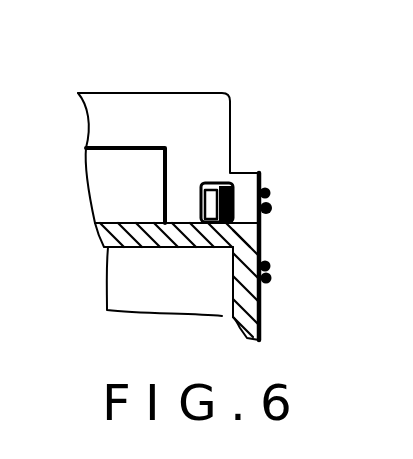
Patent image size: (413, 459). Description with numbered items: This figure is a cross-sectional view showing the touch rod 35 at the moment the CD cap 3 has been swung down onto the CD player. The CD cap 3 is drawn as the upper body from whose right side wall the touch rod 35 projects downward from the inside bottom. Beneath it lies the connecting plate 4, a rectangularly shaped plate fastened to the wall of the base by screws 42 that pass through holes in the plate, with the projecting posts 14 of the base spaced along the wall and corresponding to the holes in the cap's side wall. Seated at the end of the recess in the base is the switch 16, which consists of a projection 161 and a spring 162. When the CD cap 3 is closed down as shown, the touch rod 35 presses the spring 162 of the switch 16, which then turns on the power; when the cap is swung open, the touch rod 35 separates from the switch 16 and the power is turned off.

The CD cap 3 is at (193, 113).
The touch rod 35 is at (181, 221).
The connecting plate 4 is at (266, 240).
The switch 16 is at (233, 180).
The projection 161 is at (262, 180).
The spring 162 is at (268, 192).
The screws 42 is at (272, 209).
The projecting posts 14 is at (270, 282).